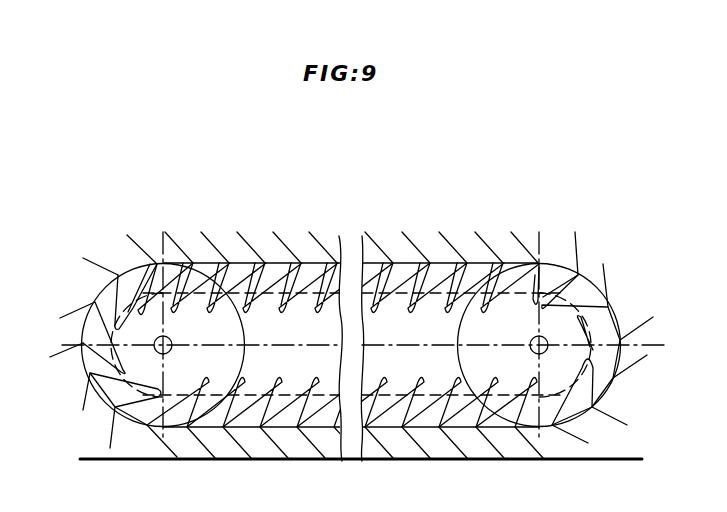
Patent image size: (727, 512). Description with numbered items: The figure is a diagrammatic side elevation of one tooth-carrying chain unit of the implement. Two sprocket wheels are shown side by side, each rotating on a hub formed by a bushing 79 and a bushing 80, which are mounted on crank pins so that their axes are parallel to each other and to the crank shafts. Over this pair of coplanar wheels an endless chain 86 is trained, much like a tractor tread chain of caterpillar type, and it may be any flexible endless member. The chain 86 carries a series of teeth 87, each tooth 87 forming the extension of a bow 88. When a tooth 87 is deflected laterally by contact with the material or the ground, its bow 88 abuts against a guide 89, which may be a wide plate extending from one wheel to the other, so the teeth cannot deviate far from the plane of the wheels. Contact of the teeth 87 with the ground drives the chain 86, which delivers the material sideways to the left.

The bushing 79 is at (168, 337).
The bushing 80 is at (534, 337).
The guide 89 is at (287, 294).
The bow 88 is at (431, 402).
The tooth 87 is at (411, 436).
The chain 86 is at (470, 428).